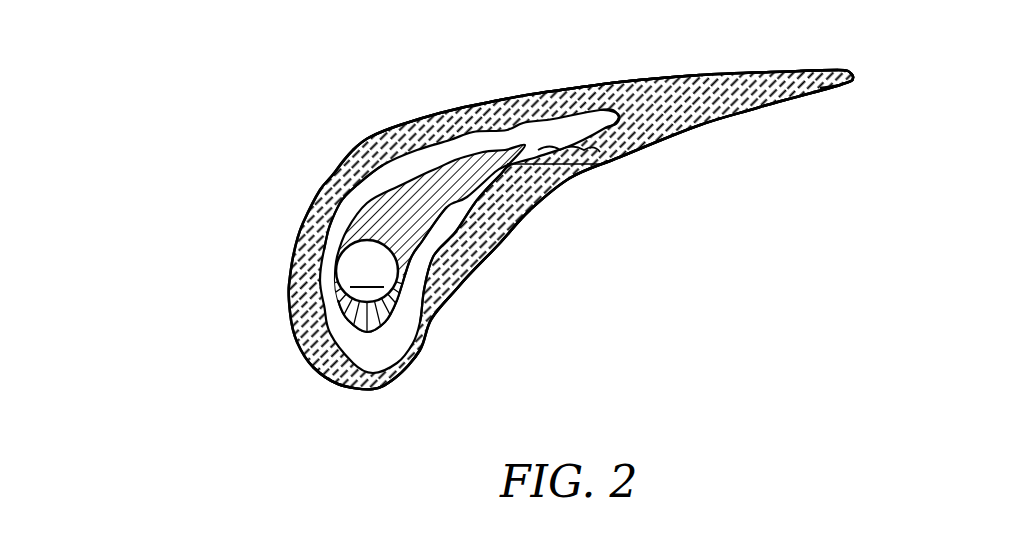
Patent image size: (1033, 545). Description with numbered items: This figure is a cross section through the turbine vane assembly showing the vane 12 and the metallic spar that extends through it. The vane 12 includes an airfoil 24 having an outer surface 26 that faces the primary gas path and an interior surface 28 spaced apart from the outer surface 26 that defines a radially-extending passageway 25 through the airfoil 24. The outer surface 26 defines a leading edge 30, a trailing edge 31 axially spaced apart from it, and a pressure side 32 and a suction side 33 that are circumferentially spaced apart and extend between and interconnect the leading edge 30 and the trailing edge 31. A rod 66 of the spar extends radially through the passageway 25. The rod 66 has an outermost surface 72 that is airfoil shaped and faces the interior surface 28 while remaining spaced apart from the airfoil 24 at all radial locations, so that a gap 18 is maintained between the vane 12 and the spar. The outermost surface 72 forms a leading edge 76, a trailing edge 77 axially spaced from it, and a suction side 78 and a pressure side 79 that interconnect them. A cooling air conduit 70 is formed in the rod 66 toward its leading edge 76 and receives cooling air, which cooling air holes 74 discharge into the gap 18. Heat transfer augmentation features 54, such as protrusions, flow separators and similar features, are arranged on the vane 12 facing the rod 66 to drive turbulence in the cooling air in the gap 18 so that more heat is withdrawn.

The vane 12 is at (148, 120).
The gap 18 is at (320, 327).
The airfoil 24 is at (266, 108).
The radially-extending passageway 25 is at (580, 104).
The outer surface 26 is at (450, 108).
The interior surface 28 is at (490, 128).
The leading edge 30 is at (400, 398).
The trailing edge 31 is at (864, 76).
The pressure side 32 is at (510, 240).
The suction side 33 is at (369, 128).
The heat transfer augmentation features 54 is at (528, 165).
The rod 66 is at (440, 245).
The cooling air conduit 70 is at (367, 271).
The outermost surface 72 is at (428, 168).
The cooling air holes 74 is at (362, 345).
The leading edge 76 is at (391, 343).
The trailing edge 77 is at (540, 132).
The suction side 78 is at (343, 212).
The pressure side 79 is at (410, 289).